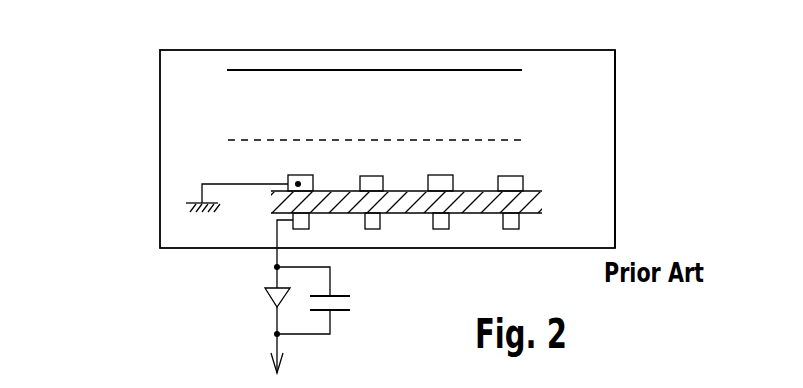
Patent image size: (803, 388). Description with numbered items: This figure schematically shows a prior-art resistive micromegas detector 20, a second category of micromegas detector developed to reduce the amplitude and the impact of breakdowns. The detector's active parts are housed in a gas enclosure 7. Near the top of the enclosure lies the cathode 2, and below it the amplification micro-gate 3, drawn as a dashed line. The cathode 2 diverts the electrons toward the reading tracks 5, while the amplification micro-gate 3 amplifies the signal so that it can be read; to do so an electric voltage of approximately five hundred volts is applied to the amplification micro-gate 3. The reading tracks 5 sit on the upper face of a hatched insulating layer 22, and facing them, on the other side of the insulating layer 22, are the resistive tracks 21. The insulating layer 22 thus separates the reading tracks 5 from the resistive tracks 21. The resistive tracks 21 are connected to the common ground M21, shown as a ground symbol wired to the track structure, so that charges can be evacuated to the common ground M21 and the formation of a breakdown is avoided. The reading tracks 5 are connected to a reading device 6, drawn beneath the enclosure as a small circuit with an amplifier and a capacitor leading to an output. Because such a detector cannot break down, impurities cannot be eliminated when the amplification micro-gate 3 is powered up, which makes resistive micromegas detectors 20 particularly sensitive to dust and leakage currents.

The resistive micromegas detector 20 is at (140, 80).
The gas enclosure 7 is at (615, 88).
The cathode 2 is at (480, 70).
The amplification micro-gate 3 is at (496, 139).
The insulating layer 22 is at (542, 199).
The reading tracks 5 is at (507, 179).
The resistive tracks 21 is at (511, 222).
The common ground M21 is at (186, 206).
The reading device 6 is at (352, 337).